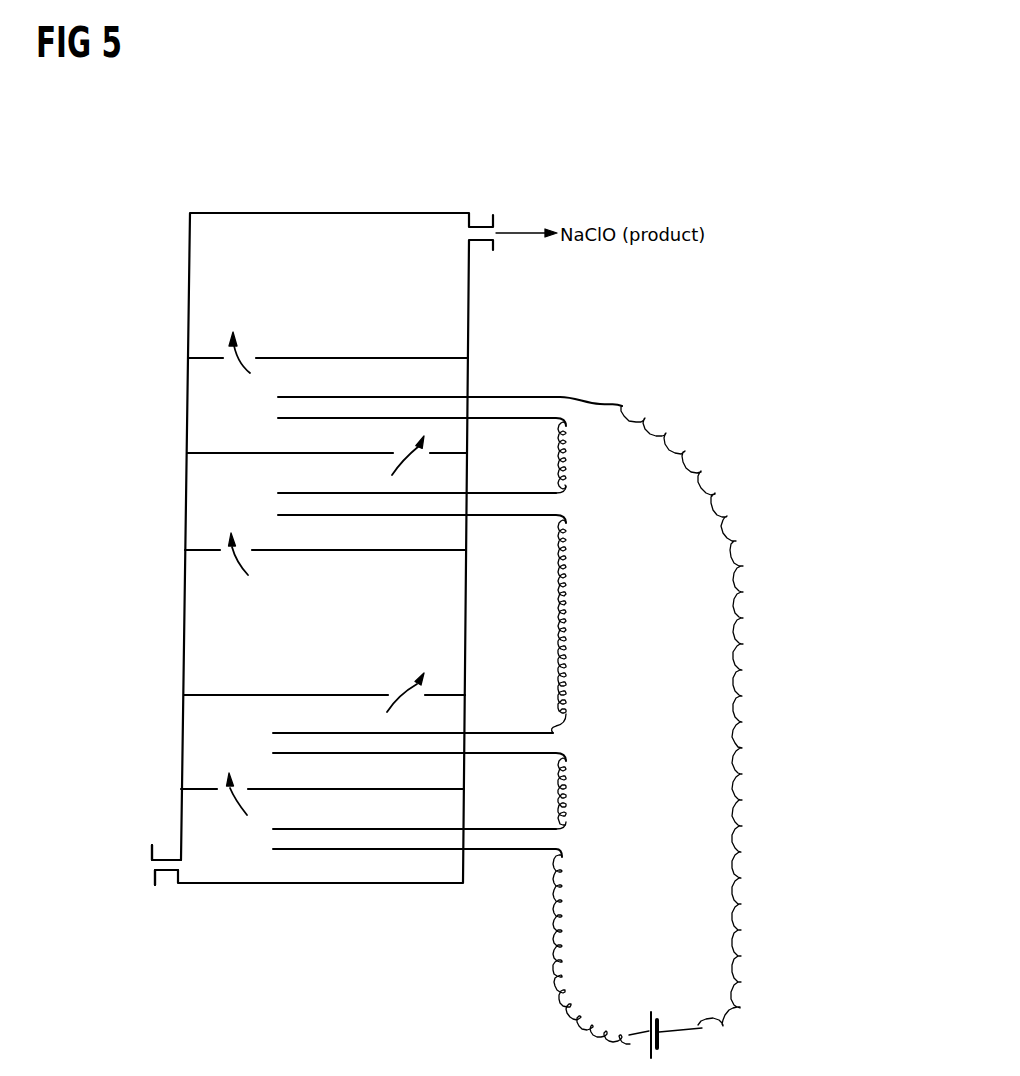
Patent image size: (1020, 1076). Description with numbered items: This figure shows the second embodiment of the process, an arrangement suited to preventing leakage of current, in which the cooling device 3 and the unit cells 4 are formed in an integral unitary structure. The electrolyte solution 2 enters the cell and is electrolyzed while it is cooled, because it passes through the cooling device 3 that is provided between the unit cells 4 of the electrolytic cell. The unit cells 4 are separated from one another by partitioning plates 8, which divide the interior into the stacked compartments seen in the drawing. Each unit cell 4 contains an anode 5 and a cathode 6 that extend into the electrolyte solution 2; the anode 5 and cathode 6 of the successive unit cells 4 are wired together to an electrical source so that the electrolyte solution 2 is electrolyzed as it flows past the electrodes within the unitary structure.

The electrolyte solution 2 is at (140, 858).
The cooling device 3 is at (185, 592).
The unit cells 4 is at (188, 392).
The anode 5 is at (491, 418).
The cathode 6 is at (486, 397).
The partitioning plates 8 is at (240, 439).